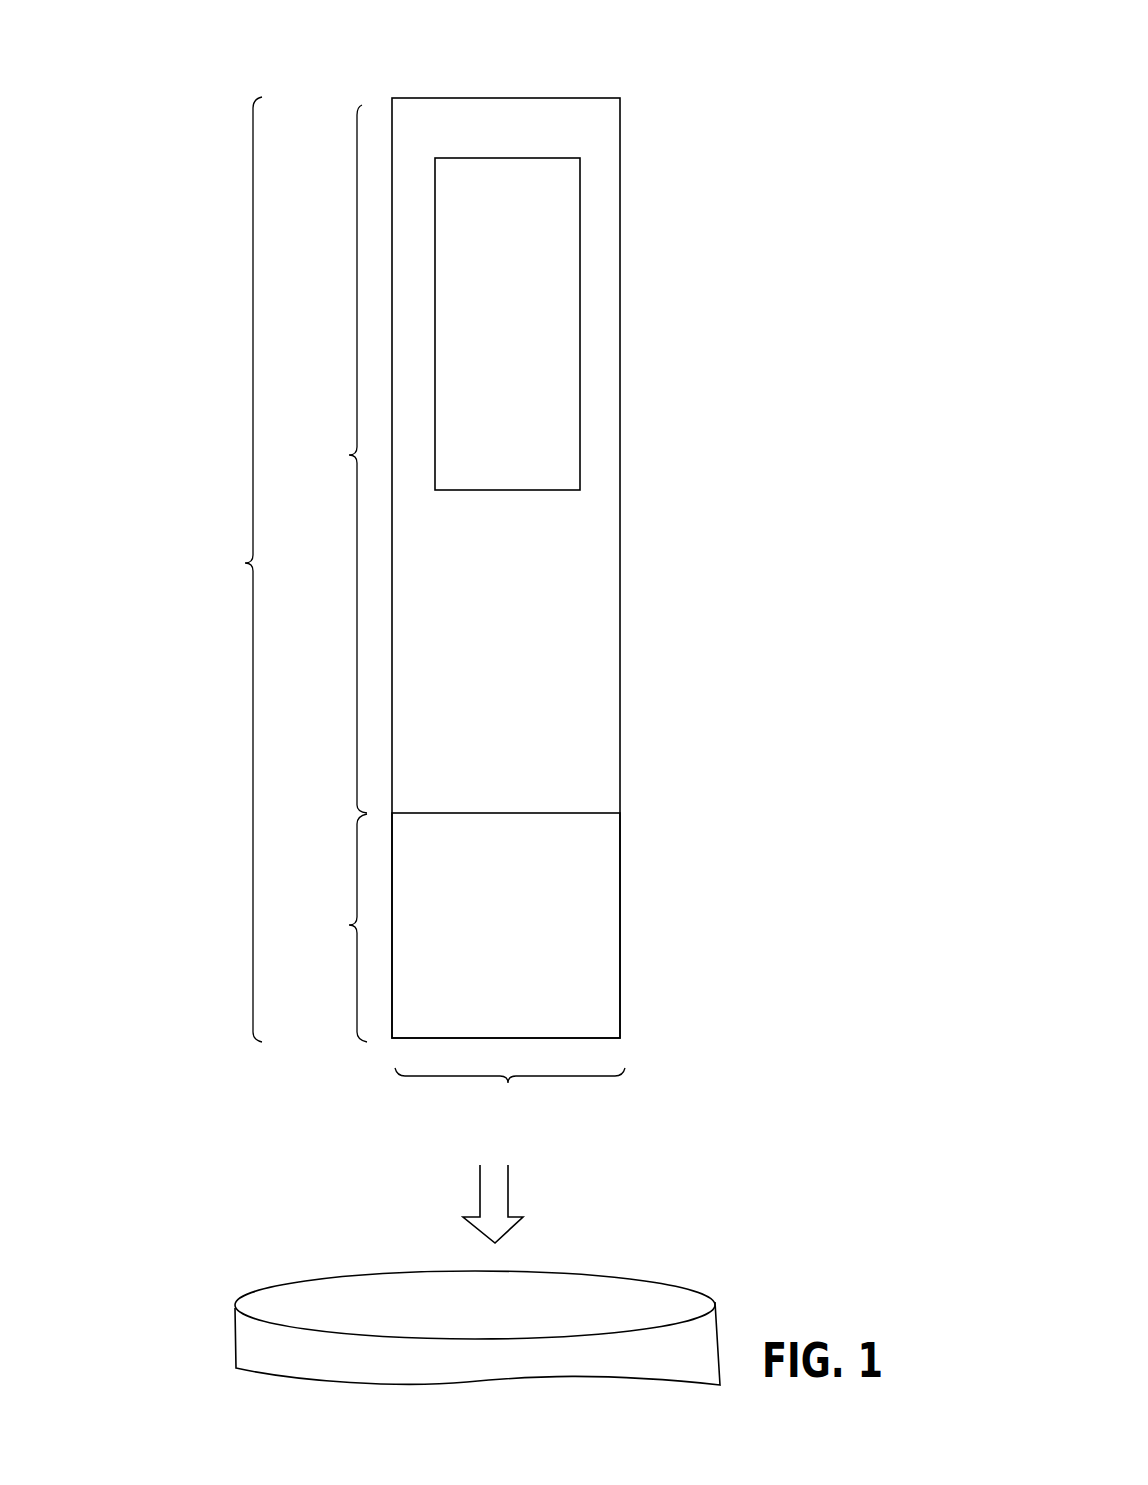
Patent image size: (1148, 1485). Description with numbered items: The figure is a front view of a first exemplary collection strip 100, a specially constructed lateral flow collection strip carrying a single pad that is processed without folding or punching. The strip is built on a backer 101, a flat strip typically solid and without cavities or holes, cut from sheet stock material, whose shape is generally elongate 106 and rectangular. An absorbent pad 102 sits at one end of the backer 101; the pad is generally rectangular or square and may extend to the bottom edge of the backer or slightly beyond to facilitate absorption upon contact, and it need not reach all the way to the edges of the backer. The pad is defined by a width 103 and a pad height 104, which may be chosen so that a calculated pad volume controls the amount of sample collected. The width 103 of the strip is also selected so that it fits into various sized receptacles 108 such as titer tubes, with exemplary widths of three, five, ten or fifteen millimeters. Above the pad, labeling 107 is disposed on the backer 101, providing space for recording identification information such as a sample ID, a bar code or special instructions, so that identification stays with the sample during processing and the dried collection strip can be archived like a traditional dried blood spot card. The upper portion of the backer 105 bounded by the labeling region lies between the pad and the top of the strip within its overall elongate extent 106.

The first exemplary collection strip 100 is at (649, 525).
The backer 101 is at (582, 625).
The absorbent pad 102 is at (595, 920).
The width 103 is at (510, 1104).
The pad height 104 is at (335, 928).
The backer upper portion length 105 is at (334, 459).
The elongate backer shape 106 is at (222, 569).
The labeling 107 is at (535, 230).
The receptacle 108 is at (308, 1273).